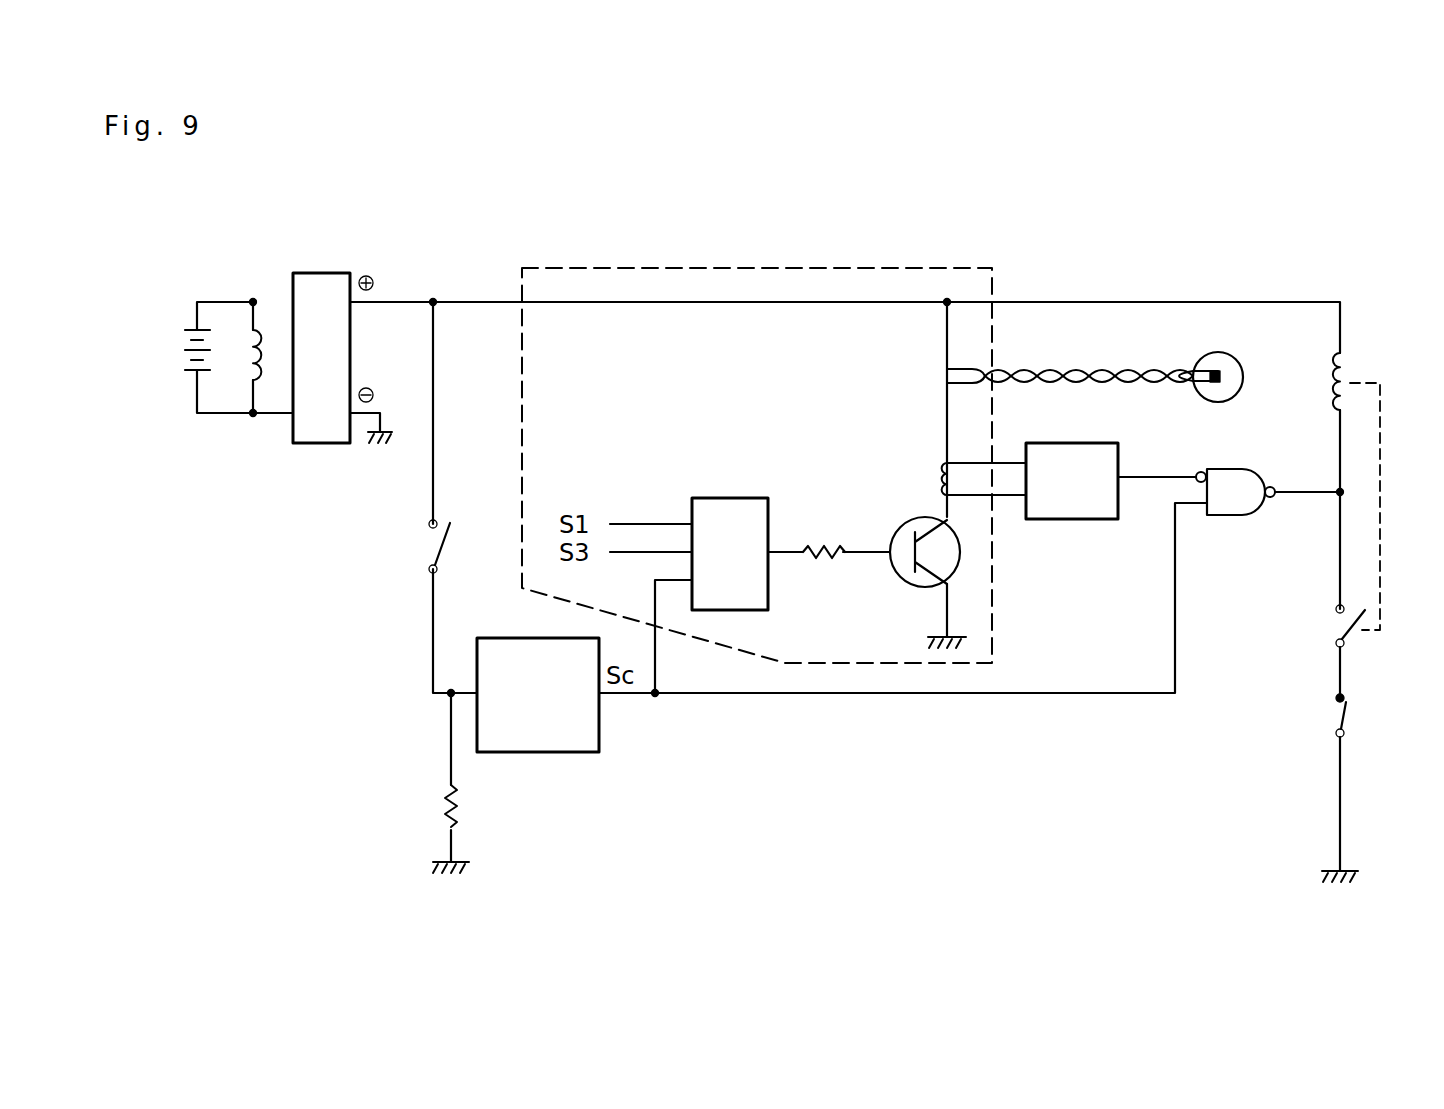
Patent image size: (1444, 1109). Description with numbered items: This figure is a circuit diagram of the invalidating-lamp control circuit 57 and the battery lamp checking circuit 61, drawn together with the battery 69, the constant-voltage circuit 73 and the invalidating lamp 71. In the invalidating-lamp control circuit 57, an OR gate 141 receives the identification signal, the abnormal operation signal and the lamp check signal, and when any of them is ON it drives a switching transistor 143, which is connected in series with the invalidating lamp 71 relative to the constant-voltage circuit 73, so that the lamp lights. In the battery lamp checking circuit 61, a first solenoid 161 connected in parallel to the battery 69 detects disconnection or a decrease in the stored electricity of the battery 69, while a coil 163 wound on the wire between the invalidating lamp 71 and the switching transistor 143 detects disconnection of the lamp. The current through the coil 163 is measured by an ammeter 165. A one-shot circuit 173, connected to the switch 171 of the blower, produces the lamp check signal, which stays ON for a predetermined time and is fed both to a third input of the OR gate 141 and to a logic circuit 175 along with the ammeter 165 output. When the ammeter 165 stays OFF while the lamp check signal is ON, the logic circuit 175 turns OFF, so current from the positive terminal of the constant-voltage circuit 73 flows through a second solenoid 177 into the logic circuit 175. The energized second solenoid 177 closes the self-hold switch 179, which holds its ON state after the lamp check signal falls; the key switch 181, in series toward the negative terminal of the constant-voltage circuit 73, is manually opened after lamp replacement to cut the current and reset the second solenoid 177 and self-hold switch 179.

The invalidating-lamp control circuit 57 is at (853, 268).
The battery lamp checking circuit 61 is at (1205, 274).
The battery 69 is at (190, 325).
The invalidating lamp 71 is at (1230, 355).
The constant-voltage circuit 73 is at (320, 445).
The OR gate 141 is at (718, 498).
The switching transistor 143 is at (907, 522).
The first solenoid 161 is at (247, 340).
The coil 163 is at (957, 503).
The ammeter 165 is at (1096, 520).
The switch 171 is at (423, 543).
The one-shot circuit 173 is at (562, 752).
The logic circuit 175 is at (1234, 515).
The second solenoid 177 is at (1323, 377).
The self-hold switch 179 is at (1333, 625).
The key switch 181 is at (1333, 715).